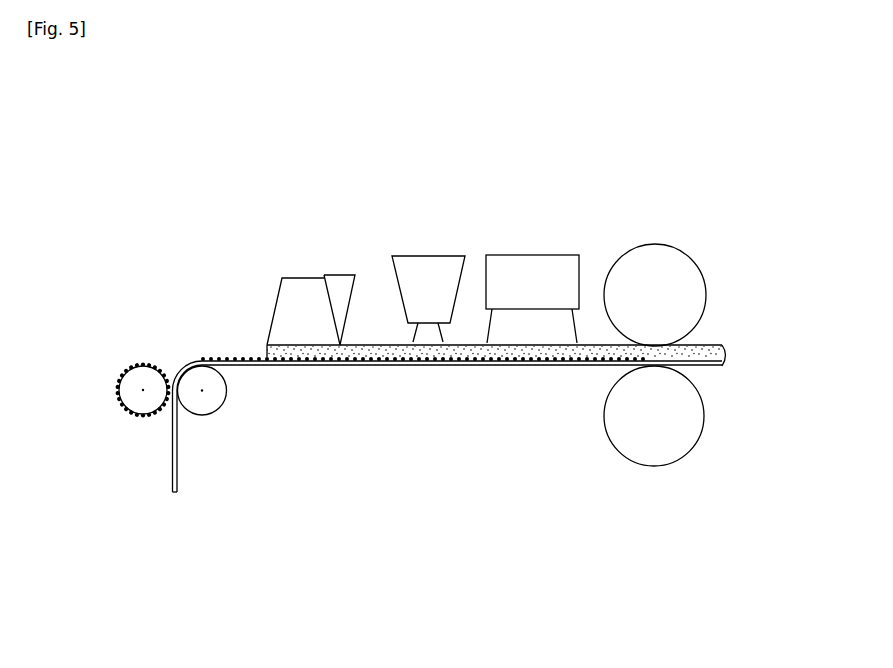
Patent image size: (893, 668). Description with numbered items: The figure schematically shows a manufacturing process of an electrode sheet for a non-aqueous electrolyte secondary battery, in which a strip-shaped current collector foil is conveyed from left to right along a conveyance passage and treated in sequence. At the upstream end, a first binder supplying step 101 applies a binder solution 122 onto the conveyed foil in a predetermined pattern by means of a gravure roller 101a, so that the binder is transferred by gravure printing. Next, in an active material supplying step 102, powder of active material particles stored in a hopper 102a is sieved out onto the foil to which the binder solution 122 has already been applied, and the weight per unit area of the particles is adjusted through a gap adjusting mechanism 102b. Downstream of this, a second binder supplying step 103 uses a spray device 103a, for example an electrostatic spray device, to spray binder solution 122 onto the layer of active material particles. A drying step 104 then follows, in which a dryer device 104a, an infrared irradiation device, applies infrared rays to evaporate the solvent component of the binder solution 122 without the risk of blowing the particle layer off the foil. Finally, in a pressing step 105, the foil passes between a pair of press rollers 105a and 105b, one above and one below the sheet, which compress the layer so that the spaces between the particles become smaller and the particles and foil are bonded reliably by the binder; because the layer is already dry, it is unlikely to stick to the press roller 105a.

The first binder supplying step 101 is at (126, 385).
The gravure roller 101a is at (143, 418).
The binder solution 122 is at (202, 358).
The active material supplying step 102 is at (275, 253).
The hopper 102a is at (278, 293).
The gap adjusting mechanism 102b is at (336, 277).
The second binder supplying step 103 is at (431, 252).
The spray device 103a is at (440, 257).
The drying step 104 is at (548, 251).
The dryer device 104a is at (557, 255).
The pressing step 105 is at (698, 313).
The press roller 105a is at (708, 288).
The press roller 105b is at (703, 432).